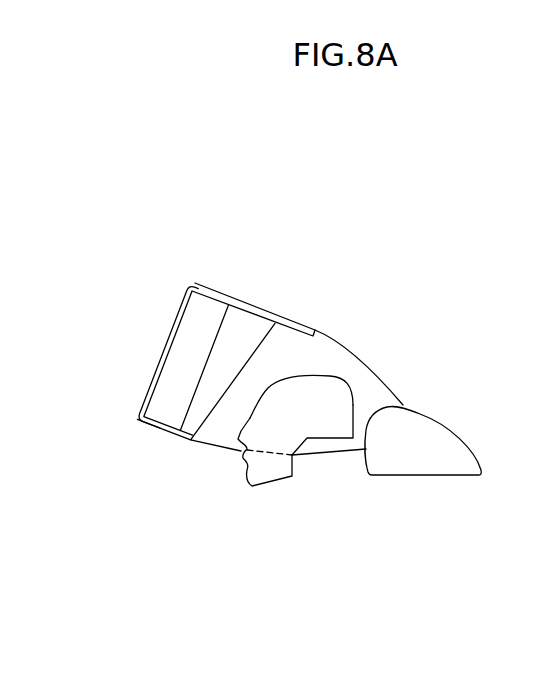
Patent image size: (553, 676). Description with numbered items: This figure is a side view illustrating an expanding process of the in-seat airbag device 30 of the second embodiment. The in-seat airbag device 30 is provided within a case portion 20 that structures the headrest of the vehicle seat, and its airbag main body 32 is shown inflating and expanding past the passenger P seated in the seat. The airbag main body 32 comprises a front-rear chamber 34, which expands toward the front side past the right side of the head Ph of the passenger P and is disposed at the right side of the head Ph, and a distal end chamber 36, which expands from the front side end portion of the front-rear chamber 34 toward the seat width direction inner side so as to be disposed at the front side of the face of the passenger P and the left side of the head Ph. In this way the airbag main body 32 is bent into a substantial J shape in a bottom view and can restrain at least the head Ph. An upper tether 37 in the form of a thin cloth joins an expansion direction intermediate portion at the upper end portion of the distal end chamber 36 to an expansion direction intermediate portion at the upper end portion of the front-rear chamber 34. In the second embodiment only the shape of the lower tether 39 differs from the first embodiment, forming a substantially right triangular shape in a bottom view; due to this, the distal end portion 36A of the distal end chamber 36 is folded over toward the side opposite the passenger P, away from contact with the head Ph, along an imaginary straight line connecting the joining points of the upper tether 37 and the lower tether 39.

The case portion 20 is at (453, 428).
The in-seat airbag device 30 is at (392, 368).
The airbag main body 32 is at (199, 281).
The front-rear chamber 34 is at (328, 362).
The distal end chamber 36 is at (208, 421).
The distal end portion 36A is at (165, 413).
The upper tether 37 is at (232, 298).
The lower tether 39 is at (140, 433).
The passenger P is at (347, 380).
The head Ph is at (312, 390).